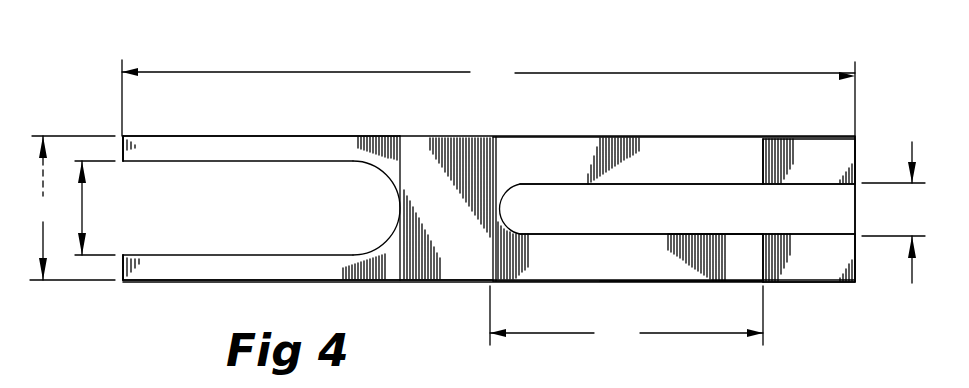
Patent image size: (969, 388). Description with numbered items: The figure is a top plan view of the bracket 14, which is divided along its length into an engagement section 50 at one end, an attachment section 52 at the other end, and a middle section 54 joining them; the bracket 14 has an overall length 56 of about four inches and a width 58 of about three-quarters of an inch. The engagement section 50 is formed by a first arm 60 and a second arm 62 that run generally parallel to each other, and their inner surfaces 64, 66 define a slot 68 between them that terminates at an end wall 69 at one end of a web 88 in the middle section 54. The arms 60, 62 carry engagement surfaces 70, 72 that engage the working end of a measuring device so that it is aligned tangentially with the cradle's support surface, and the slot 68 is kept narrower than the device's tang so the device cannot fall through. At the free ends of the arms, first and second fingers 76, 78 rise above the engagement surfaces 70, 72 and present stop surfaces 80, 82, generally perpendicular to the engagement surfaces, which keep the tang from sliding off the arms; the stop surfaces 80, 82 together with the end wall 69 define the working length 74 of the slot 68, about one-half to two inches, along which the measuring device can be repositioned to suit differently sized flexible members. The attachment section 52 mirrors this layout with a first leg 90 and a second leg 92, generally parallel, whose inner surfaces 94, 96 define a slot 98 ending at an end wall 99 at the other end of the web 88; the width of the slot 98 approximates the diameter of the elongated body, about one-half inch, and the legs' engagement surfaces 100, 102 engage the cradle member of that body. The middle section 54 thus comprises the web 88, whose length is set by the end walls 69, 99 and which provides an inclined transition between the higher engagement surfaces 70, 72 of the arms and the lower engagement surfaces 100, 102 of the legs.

The bracket 14 is at (646, 61).
The engagement section 50 is at (678, 294).
The attachment section 52 is at (138, 293).
The middle section 54 is at (408, 296).
The length 56 is at (488, 99).
The width 58 is at (72, 208).
The first arm 60 is at (605, 281).
The second arm 62 is at (614, 137).
The inner surface 64 is at (682, 234).
The inner surface 66 is at (763, 186).
The slot 68 is at (893, 212).
The end wall 69 is at (497, 223).
The engagement surface 70 is at (610, 251).
The engagement surface 72 is at (681, 148).
The working length 74 is at (626, 316).
The first finger 76 is at (819, 268).
The second finger 78 is at (824, 149).
The stop surface 80 is at (765, 281).
The stop surface 82 is at (763, 155).
The web 88 is at (452, 237).
The first leg 90 is at (273, 282).
The second leg 92 is at (286, 136).
The inner surface 94 is at (200, 255).
The inner surface 96 is at (210, 161).
The slot 98 is at (88, 207).
The end wall 99 is at (396, 183).
The engagement surface 100 is at (162, 266).
The engagement surface 102 is at (168, 146).